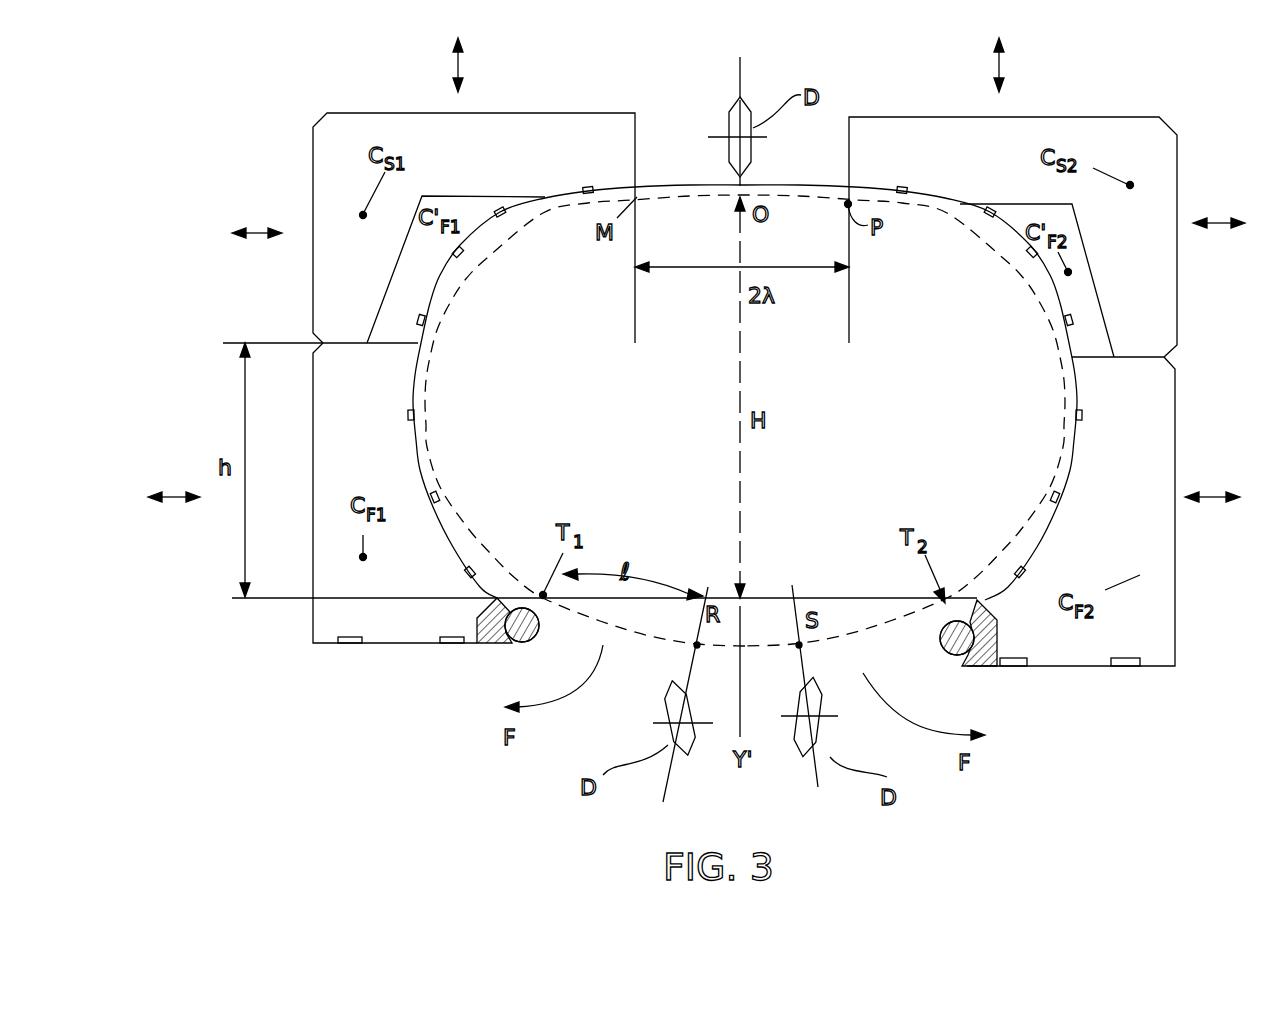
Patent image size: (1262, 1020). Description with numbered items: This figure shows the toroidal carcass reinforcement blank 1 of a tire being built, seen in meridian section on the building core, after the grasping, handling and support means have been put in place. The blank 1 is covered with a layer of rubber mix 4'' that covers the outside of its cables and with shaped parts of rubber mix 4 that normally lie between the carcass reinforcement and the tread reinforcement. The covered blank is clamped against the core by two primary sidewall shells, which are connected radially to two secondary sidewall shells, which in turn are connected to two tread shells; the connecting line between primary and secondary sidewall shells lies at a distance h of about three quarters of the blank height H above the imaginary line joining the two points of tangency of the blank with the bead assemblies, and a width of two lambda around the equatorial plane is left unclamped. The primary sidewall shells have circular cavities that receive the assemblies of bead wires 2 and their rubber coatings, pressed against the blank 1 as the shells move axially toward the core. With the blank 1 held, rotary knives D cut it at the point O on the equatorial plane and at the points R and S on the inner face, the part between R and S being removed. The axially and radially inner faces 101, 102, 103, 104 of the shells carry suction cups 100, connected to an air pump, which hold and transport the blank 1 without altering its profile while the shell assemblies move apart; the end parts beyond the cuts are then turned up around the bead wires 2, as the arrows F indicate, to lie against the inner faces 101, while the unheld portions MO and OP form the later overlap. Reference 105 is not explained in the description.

The carcass reinforcement blank 1 is at (428, 363).
The bead wires 2 is at (522, 640).
The shaped parts of rubber mix 4 is at (1001, 284).
The layer of rubber mix 4'' is at (1035, 407).
The suction cups 100 is at (440, 490).
The radially inner faces of the sidewall shells 101 is at (1095, 667).
The axially and radially inner face of the shells 102 is at (1072, 468).
The axially and radially inner face of the shells 103 is at (1052, 287).
The axially and radially inner face of the shells 104 is at (926, 200).
The upper left block 105 is at (637, 150).